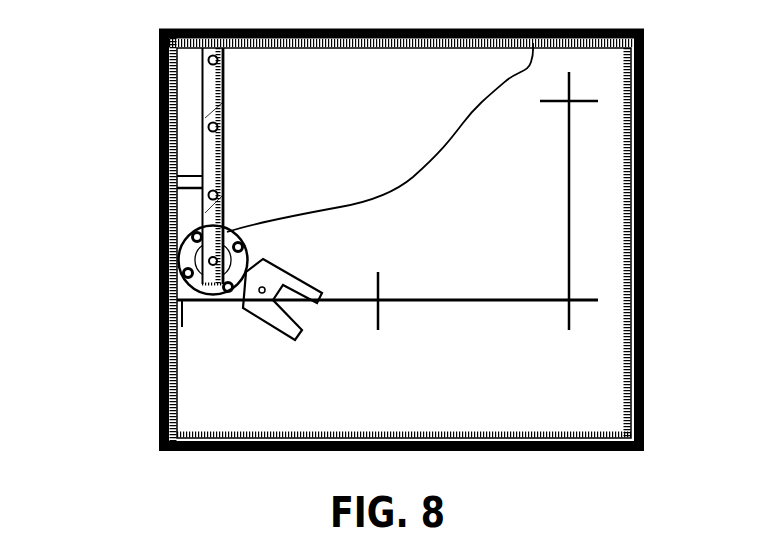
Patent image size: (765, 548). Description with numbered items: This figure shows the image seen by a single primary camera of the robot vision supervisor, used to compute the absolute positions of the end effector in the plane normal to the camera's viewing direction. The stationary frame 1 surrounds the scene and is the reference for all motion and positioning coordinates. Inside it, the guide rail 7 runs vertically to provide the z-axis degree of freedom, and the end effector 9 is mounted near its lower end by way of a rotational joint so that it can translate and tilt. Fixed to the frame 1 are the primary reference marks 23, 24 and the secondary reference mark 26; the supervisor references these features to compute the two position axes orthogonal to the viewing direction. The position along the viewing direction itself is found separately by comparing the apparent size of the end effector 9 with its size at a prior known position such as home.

The frame 1 is at (185, 405).
The guide rail 7 is at (201, 107).
The end effector 9 is at (258, 318).
The primary reference mark 23 is at (435, 301).
The primary reference mark 24 is at (593, 103).
The secondary reference mark 26 is at (570, 233).